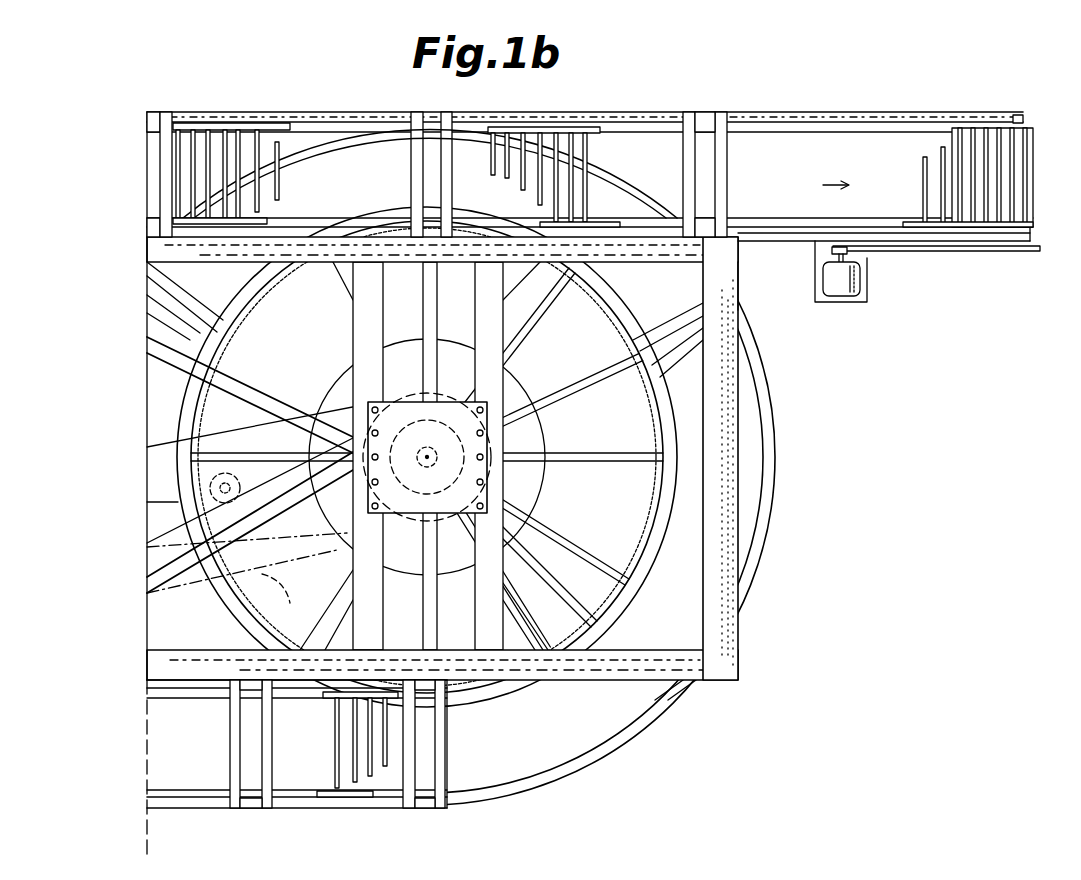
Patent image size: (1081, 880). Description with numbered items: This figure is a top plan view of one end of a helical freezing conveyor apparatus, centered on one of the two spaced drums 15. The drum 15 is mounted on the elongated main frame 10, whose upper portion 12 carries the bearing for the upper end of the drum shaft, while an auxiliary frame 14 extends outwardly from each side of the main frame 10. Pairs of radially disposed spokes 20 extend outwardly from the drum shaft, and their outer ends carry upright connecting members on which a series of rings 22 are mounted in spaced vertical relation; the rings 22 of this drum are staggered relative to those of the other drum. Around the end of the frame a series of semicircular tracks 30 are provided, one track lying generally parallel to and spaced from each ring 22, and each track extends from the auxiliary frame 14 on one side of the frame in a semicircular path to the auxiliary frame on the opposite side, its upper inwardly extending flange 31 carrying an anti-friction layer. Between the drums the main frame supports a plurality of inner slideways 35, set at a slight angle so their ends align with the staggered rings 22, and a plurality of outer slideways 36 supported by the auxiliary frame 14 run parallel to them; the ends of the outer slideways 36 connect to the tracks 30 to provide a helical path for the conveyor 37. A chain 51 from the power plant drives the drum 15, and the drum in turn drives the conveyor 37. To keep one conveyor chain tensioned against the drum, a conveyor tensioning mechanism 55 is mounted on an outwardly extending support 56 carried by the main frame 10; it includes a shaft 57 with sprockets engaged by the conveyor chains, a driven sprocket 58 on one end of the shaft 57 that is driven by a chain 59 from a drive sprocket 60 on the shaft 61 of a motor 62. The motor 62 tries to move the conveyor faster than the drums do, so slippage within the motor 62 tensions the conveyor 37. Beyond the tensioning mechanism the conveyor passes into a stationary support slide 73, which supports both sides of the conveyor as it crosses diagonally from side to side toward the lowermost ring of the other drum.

The main frame 10 is at (748, 540).
The upper portion 12 is at (736, 389).
The auxiliary frame 14 is at (295, 100).
The drum 15 is at (598, 527).
The radially disposed spokes 20 is at (562, 297).
The rings 22 is at (640, 421).
The semicircular tracks 30 is at (784, 440).
The upper inwardly extending flange 31 is at (756, 462).
The inner slideways 35 is at (148, 219).
The outer slideways 36 is at (367, 119).
The conveyor 37 is at (601, 147).
The chain 51 is at (247, 545).
The conveyor tensioning mechanism 55 is at (942, 259).
The outwardly extending support 56 is at (866, 95).
The shaft 57 is at (1013, 179).
The driven sprocket 58 is at (1030, 253).
The chain 59 is at (962, 255).
The drive sprocket 60 is at (841, 246).
The shaft 61 is at (834, 257).
The motor 62 is at (839, 291).
The stationary support slide 73 is at (162, 393).